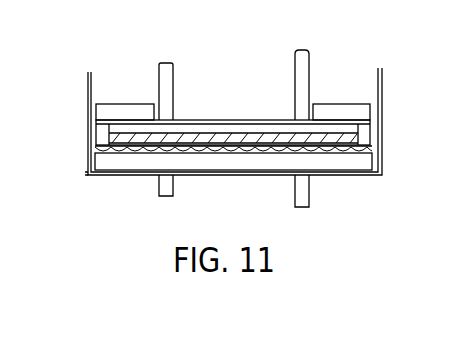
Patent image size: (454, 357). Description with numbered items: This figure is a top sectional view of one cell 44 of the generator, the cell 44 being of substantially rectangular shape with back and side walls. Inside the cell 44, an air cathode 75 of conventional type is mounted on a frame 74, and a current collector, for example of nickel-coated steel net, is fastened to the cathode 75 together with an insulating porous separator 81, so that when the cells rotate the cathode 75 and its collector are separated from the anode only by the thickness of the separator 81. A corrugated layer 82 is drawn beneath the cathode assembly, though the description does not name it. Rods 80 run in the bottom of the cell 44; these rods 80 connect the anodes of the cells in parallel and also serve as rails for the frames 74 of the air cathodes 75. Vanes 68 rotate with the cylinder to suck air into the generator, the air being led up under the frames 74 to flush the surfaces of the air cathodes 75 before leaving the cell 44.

The cell 44 is at (382, 92).
The vanes 68 is at (133, 110).
The frame 74 is at (228, 120).
The air cathode 75 is at (327, 140).
The rods 80 is at (305, 72).
The insulating porous separator 81 is at (147, 149).
The corrugated layer 82 is at (190, 143).